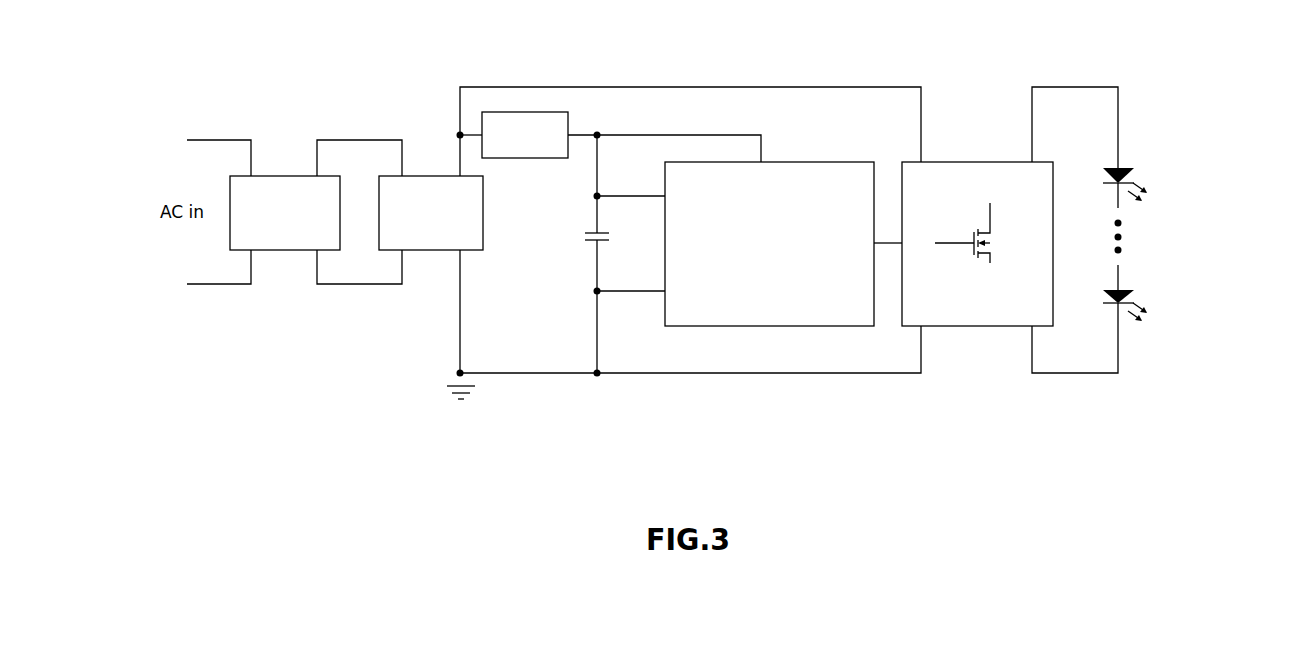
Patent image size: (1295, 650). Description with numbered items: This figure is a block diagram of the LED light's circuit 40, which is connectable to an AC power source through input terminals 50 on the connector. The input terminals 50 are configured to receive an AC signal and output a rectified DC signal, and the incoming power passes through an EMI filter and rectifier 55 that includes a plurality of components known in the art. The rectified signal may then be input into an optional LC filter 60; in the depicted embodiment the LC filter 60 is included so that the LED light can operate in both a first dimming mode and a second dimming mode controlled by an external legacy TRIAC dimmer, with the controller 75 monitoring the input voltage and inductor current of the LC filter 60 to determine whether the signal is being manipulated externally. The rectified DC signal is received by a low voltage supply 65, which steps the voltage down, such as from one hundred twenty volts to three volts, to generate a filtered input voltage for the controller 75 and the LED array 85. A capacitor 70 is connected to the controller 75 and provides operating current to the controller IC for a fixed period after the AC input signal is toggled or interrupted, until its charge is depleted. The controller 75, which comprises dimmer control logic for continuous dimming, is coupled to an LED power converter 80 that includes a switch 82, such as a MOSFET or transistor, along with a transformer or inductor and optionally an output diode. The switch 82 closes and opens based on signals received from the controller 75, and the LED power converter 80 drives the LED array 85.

The circuit 40 is at (758, 396).
The input terminals 50 is at (181, 138).
The EMI filter and rectifier 55 is at (287, 265).
The LC filter 60 is at (436, 265).
The low voltage supply 65 is at (521, 158).
The capacitor 70 is at (583, 242).
The controller 75 is at (769, 244).
The LED power converter 80 is at (977, 244).
The switch 82 is at (991, 283).
The LED array 85 is at (1141, 222).